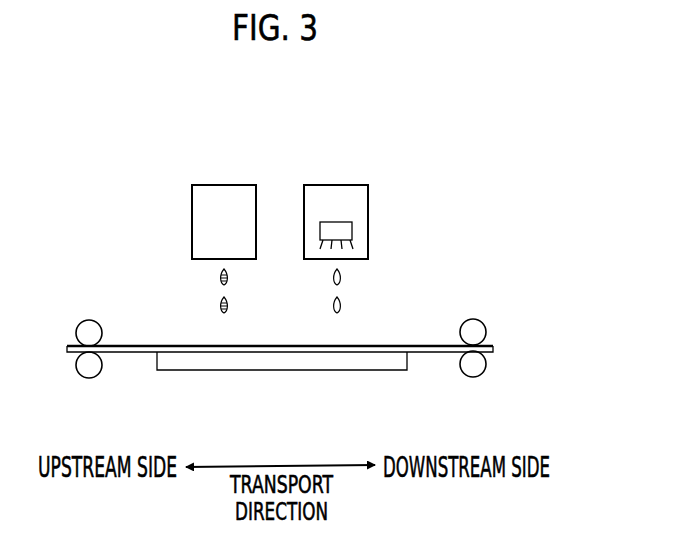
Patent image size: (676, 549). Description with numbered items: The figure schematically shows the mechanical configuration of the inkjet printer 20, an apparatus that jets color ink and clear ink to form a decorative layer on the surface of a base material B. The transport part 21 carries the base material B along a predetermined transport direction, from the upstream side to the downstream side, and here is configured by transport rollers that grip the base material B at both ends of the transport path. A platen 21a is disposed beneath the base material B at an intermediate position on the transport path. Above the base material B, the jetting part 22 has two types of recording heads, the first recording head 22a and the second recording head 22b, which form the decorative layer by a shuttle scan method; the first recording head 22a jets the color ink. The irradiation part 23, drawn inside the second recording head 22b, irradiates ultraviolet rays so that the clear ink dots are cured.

The inkjet printer 20 is at (98, 114).
The transport part 21 is at (79, 311).
The platen 21a is at (282, 360).
The jetting part 22 is at (247, 166).
The first recording head 22a is at (208, 198).
The second recording head 22b is at (352, 196).
The irradiation part 23 is at (360, 228).
The base material B is at (427, 345).